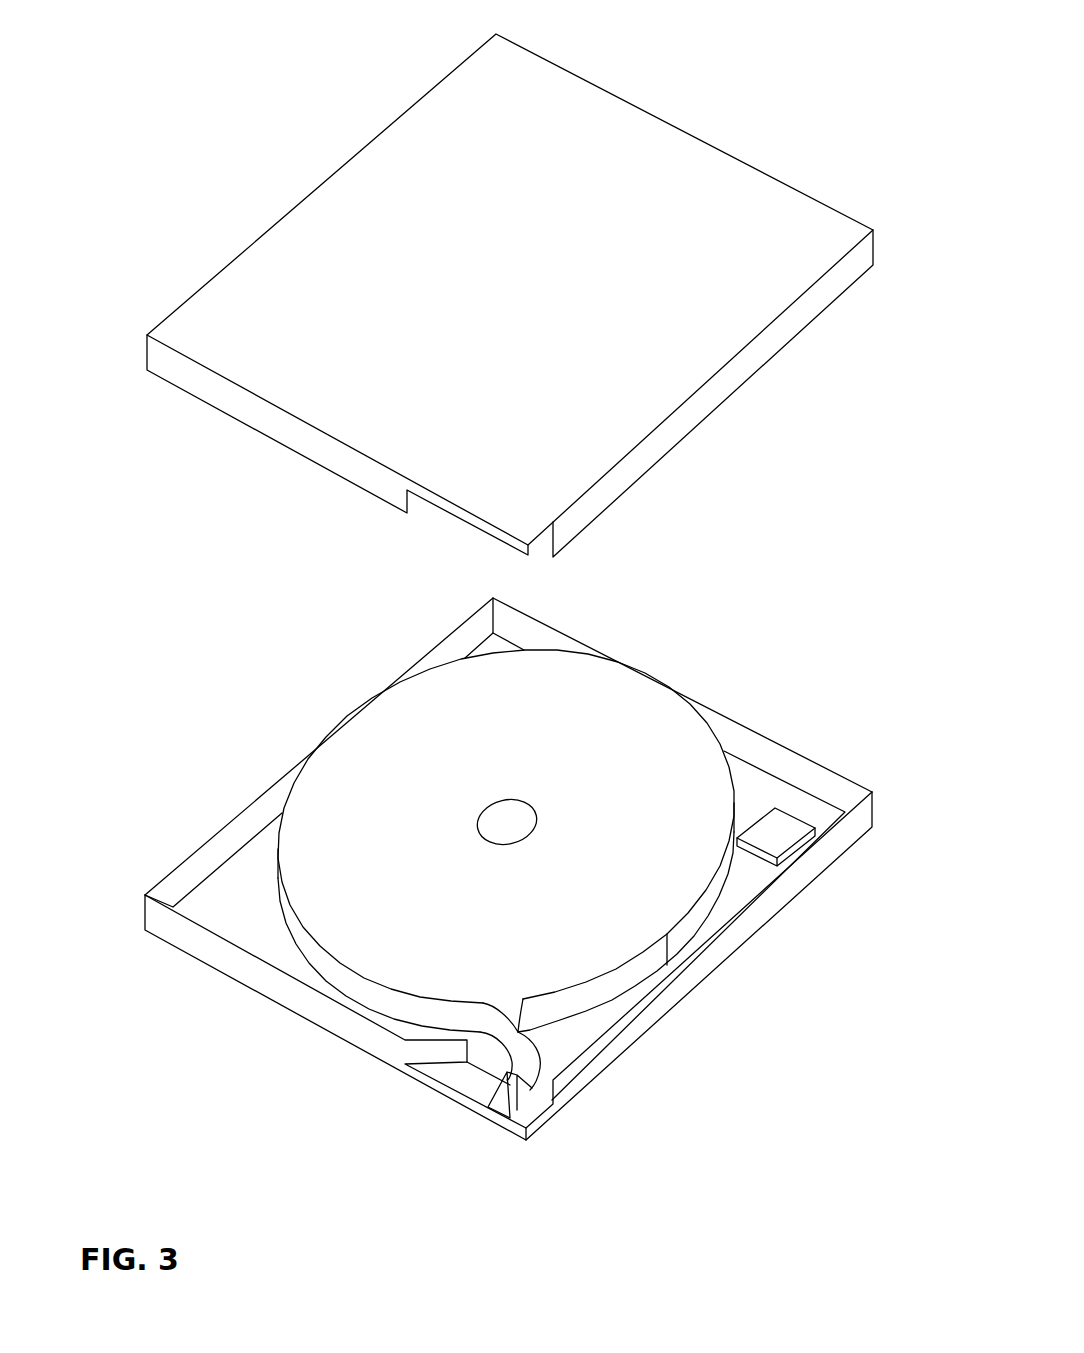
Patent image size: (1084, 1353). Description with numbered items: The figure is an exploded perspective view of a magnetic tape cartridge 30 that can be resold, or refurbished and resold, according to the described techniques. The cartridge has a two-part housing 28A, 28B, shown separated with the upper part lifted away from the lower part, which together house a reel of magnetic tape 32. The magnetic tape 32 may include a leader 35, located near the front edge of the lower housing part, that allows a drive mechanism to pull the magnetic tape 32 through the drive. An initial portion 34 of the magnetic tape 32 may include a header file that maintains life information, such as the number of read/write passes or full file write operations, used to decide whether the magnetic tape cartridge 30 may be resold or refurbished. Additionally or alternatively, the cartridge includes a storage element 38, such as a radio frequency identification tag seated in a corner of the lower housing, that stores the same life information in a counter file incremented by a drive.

The magnetic tape cartridge 30 is at (248, 52).
The housing 28A is at (737, 193).
The housing 28B is at (213, 948).
The magnetic tape 32 is at (650, 703).
The initial portion 34 is at (612, 985).
The leader 35 is at (521, 1111).
The storage element 38 is at (780, 830).